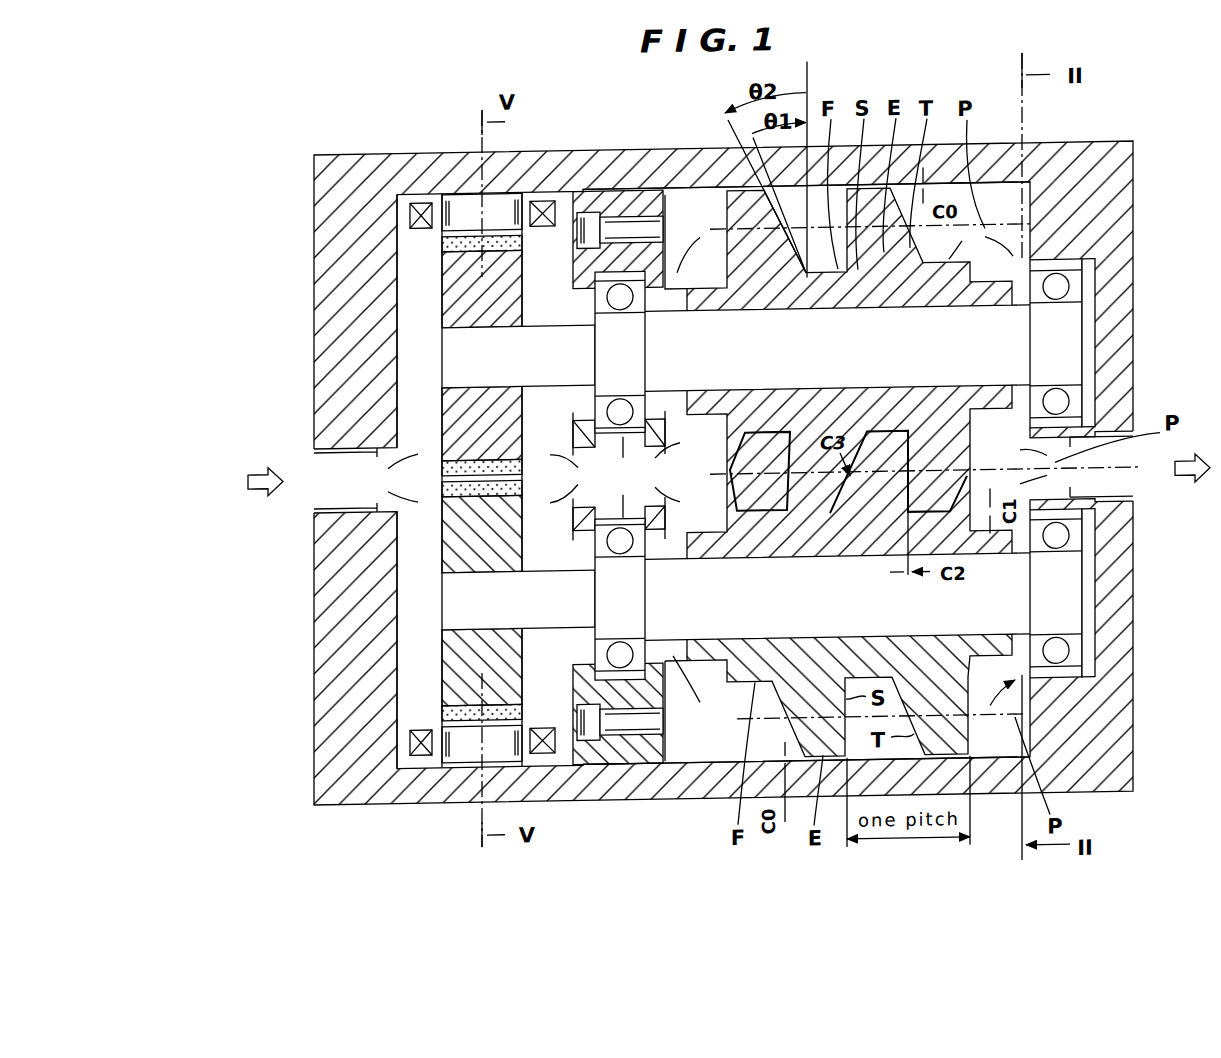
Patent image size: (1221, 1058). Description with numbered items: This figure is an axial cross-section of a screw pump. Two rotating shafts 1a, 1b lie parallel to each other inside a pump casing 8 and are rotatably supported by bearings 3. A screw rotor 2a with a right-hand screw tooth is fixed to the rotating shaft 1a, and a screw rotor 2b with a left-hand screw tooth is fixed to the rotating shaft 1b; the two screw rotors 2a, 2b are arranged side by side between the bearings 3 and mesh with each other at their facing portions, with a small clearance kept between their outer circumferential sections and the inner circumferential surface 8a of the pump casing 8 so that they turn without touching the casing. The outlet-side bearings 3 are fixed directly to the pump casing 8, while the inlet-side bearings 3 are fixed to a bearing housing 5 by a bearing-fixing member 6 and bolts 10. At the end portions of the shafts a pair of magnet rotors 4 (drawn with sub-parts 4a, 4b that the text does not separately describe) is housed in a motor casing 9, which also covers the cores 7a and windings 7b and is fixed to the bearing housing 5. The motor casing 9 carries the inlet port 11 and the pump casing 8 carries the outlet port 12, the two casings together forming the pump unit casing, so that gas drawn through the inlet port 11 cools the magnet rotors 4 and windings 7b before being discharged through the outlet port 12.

The rotating shaft 1a is at (460, 350).
The rotating shaft 1b is at (460, 600).
The screw rotor 2a is at (1068, 270).
The screw rotor 2b is at (973, 735).
The bearing 3 is at (612, 282).
The magnet rotor 4 is at (432, 394).
The stator coil 4a is at (443, 249).
The stator core 4b is at (443, 282).
The bearing housing 5 is at (600, 219).
The bearing-fixing member 6 is at (655, 201).
The core 7a is at (447, 763).
The winding 7b is at (421, 745).
The pump casing 8 is at (1011, 175).
The inner circumferential surface 8a is at (993, 200).
The motor casing 9 is at (352, 298).
The bolt 10 is at (500, 262).
The inlet port 11 is at (313, 463).
The outlet port 12 is at (1100, 505).